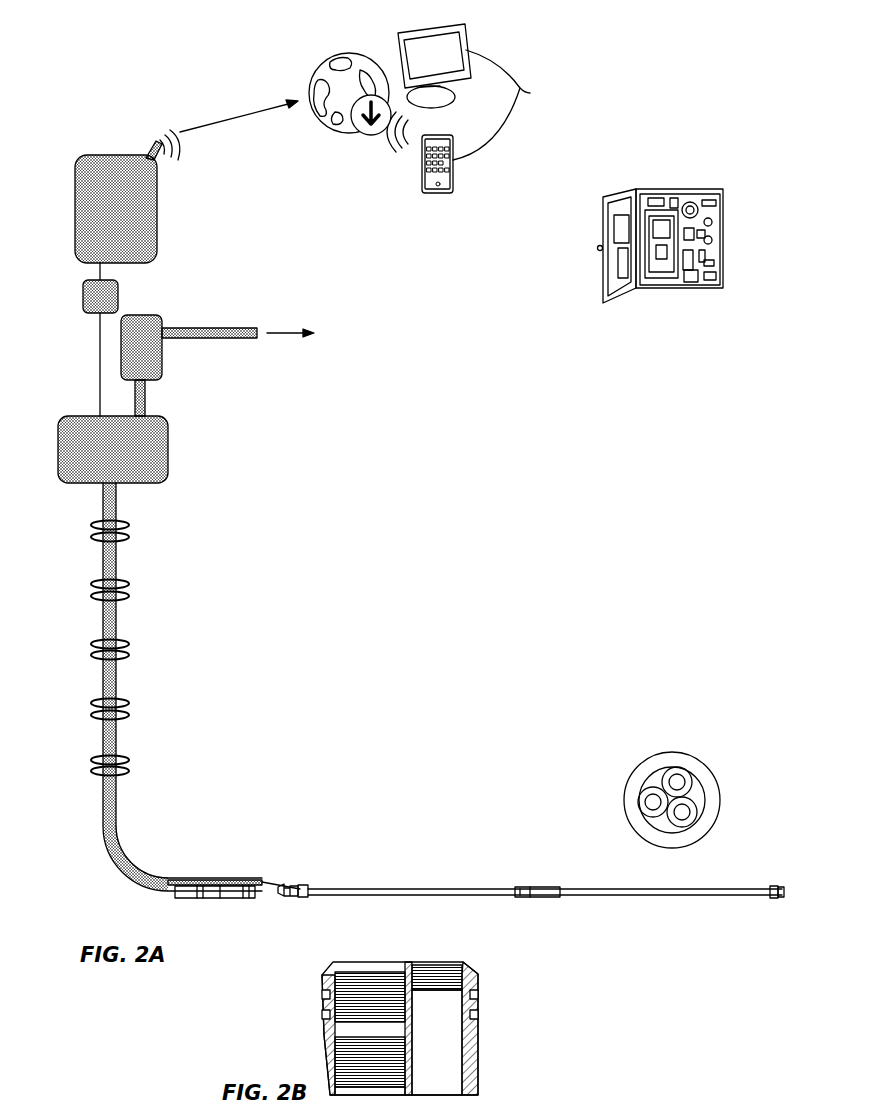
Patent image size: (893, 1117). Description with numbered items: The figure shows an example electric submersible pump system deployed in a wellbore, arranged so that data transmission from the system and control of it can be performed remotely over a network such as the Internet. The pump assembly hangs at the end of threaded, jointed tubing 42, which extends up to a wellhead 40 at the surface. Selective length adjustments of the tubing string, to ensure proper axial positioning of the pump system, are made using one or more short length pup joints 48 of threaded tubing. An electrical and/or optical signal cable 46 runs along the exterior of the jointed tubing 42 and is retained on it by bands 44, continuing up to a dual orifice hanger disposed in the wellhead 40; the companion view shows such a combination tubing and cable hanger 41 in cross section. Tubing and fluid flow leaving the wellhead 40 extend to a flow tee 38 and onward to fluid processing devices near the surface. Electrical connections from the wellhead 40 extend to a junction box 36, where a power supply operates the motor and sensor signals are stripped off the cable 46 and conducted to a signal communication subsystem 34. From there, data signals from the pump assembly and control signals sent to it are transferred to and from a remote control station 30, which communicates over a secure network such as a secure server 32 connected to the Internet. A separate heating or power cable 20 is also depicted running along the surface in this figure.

In FIG. 2A, the heating cable 20 is at (432, 895).
In FIG. 2A, the remote control station 30 is at (474, 108).
In FIG. 2A, the secure server 32 is at (326, 70).
In FIG. 2A, the signal communication subsystem 34 is at (158, 210).
In FIG. 2A, the junction box 36 is at (118, 297).
In FIG. 2A, the flow tee 38 is at (162, 365).
In FIG. 2A, the wellhead 40 is at (168, 448).
In FIG. 2B, the dual orifice hanger 41 is at (478, 1030).
In FIG. 2A, the jointed tubing 42 is at (103, 741).
In FIG. 2A, the bands 44 is at (126, 762).
In FIG. 2A, the electrical and/or optical signal cable 46 is at (118, 844).
In FIG. 2A, the pup joints 48 is at (216, 898).